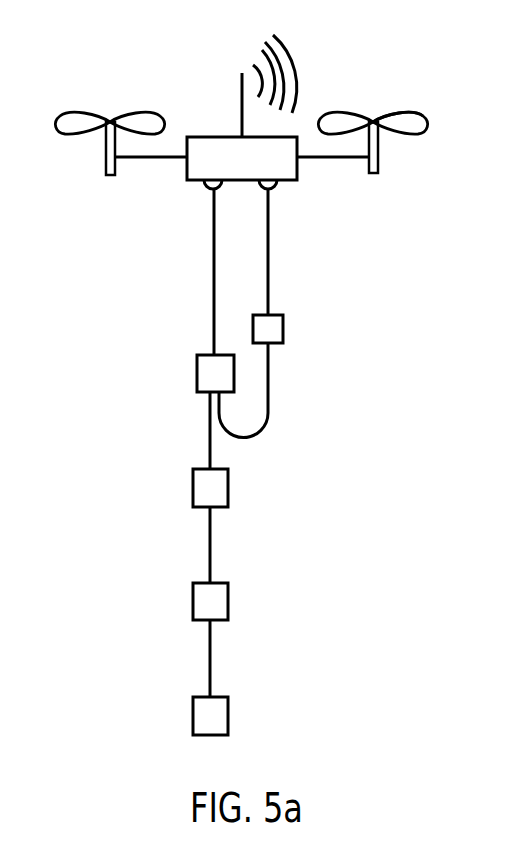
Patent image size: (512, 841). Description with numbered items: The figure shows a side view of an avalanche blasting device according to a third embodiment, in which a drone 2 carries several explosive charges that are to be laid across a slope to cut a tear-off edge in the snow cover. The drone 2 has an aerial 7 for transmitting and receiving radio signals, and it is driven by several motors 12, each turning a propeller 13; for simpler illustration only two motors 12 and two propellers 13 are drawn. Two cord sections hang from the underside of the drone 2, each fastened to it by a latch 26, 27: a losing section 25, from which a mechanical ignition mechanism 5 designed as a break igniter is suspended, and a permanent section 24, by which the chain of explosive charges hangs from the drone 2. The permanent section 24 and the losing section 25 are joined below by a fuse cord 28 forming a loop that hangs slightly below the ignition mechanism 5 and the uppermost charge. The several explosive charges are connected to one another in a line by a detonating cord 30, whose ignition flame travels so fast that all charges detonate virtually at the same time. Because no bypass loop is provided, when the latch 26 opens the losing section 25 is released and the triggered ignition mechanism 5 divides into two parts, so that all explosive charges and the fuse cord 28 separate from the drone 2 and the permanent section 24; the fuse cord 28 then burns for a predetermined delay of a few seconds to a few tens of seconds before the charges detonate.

The drone 2 is at (171, 82).
The aerial 7 is at (241, 87).
The motor 12 is at (106, 166).
The propeller 13 is at (408, 118).
The permanent section 24 is at (268, 270).
The losing section 25 is at (214, 273).
The latch 26 is at (212, 187).
The latch 27 is at (277, 186).
The ignition mechanism 5 is at (283, 327).
The fuse cord 28 is at (268, 395).
The detonating cord 30 is at (210, 450).